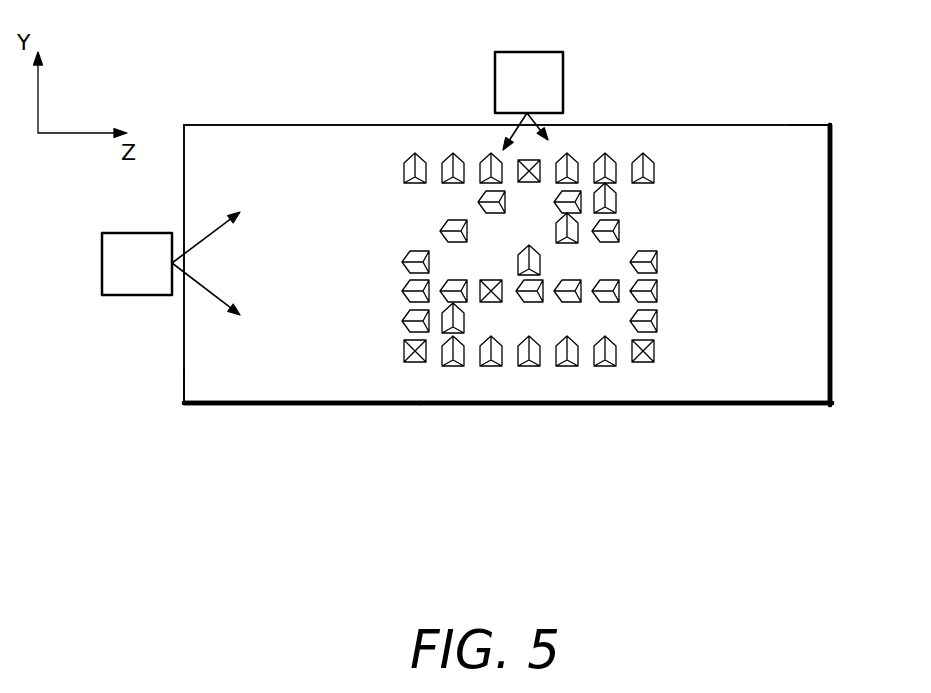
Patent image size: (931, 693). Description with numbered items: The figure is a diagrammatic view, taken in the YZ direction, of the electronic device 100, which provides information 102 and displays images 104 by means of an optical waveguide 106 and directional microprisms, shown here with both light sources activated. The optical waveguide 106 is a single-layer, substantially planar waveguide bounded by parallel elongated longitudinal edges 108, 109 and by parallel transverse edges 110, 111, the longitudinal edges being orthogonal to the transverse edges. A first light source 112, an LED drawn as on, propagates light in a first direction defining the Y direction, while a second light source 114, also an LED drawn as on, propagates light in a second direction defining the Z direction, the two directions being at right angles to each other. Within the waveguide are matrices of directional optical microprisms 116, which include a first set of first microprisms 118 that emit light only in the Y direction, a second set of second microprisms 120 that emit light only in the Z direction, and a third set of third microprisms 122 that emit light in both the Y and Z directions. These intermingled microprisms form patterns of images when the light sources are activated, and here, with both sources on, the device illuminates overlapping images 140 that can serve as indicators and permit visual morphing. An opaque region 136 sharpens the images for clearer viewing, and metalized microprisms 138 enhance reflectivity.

The electronic device 100 is at (832, 405).
The information 102 is at (330, 390).
The images 104 is at (691, 390).
The optical waveguide 106 is at (831, 124).
The longitudinal edge 108 is at (233, 124).
The longitudinal edge 109 is at (203, 405).
The transverse edge 110 is at (184, 355).
The transverse edge 111 is at (833, 353).
The first light source 112 is at (495, 62).
The second light source 114 is at (102, 252).
The directional optical microprisms 116 is at (551, 148).
The first microprisms 118 is at (402, 290).
The second microprisms 120 is at (491, 152).
The third microprisms 122 is at (655, 352).
The opaque region 136 is at (503, 390).
The metalized microprisms 138 is at (619, 229).
The overlapping images 140 is at (434, 203).